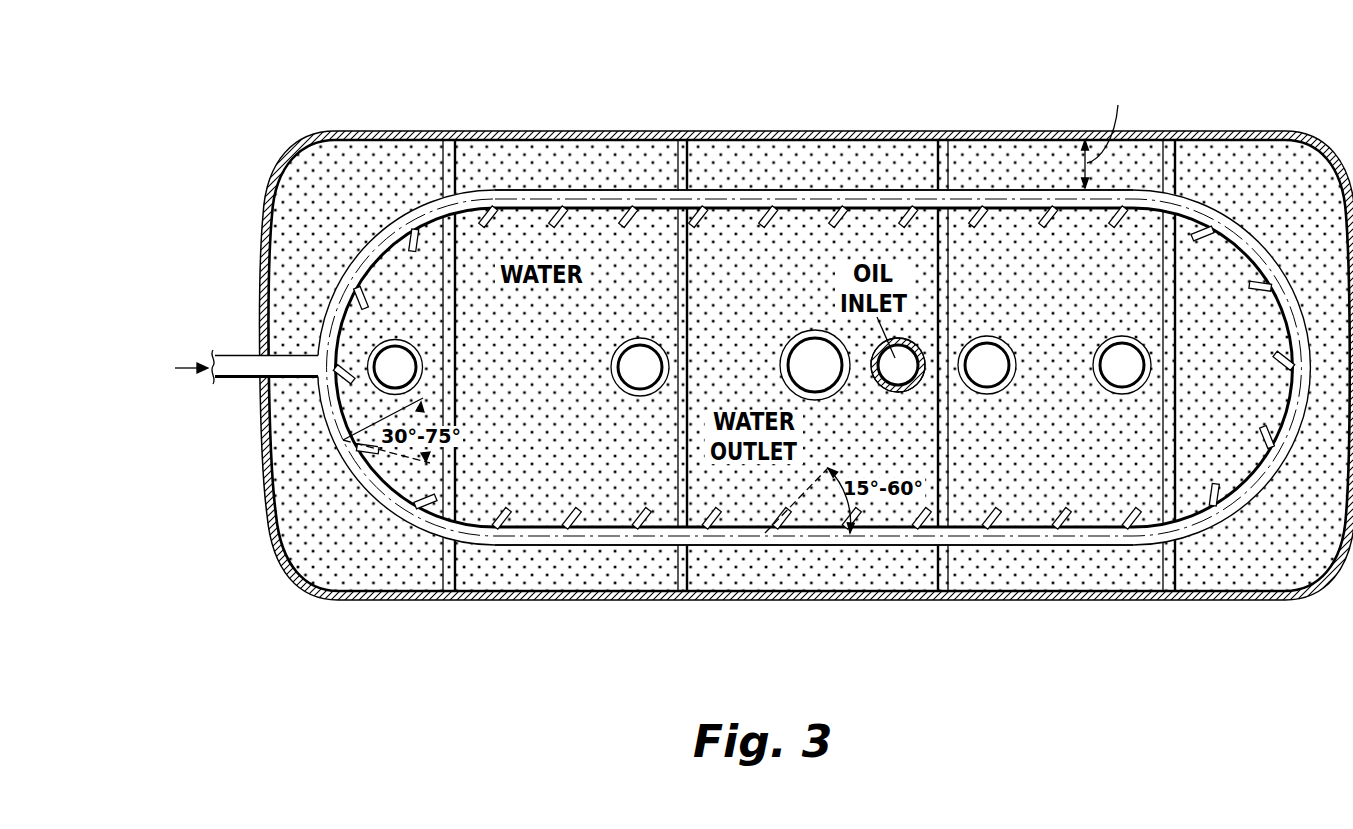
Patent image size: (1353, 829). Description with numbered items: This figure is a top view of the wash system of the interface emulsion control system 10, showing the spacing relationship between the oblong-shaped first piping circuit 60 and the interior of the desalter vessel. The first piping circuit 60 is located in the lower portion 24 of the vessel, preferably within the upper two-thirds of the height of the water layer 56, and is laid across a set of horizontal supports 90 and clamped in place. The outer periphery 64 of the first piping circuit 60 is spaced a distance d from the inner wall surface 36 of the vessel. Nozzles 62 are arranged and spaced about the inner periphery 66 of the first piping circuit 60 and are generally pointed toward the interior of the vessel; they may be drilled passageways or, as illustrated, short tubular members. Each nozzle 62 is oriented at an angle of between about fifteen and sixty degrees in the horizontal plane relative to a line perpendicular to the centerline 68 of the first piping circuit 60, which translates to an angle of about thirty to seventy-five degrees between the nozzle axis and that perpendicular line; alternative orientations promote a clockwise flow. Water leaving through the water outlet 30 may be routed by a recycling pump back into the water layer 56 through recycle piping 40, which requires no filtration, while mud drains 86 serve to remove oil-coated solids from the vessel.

The interface emulsion control system 10 is at (993, 182).
The lower portion of separator vessel 24 is at (277, 520).
The water outlet 30 is at (805, 357).
The inner wall surface of separator vessel 36 is at (374, 150).
The recycle piping 40 is at (238, 378).
The water layer 56 is at (318, 208).
The first piping circuit 60 is at (814, 356).
The nozzle 62 is at (1125, 517).
The outer periphery of first piping circuit 64 is at (607, 190).
The inner periphery of first piping circuit 66 is at (610, 524).
The centerline of first piping circuit 68 is at (820, 197).
The mud drain 86 is at (405, 365).
The supports 90 is at (478, 160).